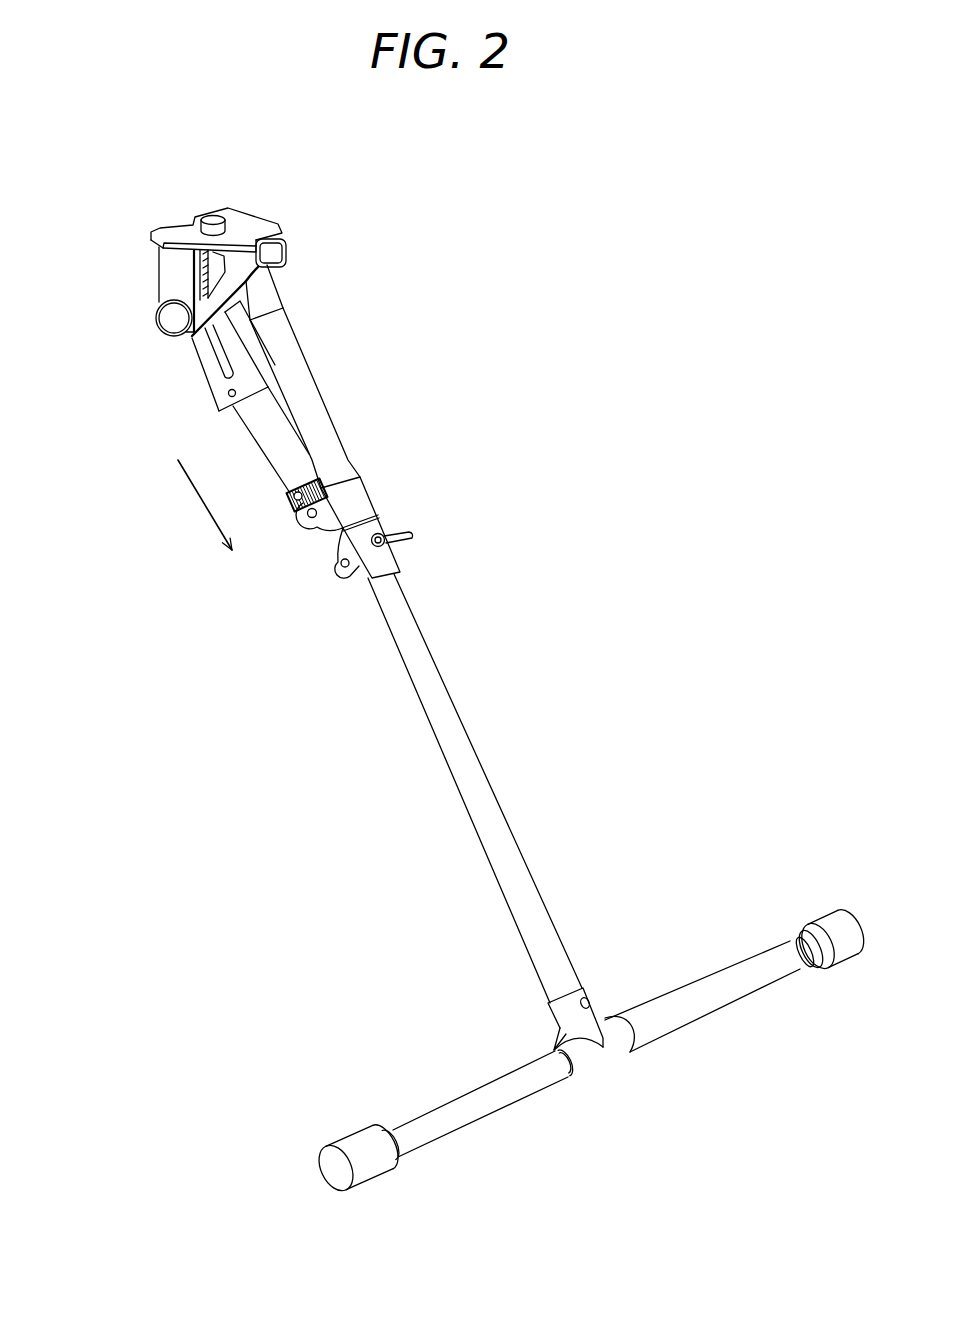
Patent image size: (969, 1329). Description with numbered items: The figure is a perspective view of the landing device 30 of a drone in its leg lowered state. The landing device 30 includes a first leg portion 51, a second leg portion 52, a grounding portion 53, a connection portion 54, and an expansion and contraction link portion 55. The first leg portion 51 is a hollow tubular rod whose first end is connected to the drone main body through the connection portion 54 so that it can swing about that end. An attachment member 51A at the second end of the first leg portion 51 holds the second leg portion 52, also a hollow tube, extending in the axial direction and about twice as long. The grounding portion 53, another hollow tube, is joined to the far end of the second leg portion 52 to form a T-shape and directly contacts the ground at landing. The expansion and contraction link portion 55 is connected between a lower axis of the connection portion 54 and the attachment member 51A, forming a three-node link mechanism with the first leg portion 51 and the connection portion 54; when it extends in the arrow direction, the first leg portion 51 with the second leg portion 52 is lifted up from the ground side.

The landing device 30 is at (682, 412).
The first leg portion 51 is at (307, 387).
The attachment member 51A is at (403, 500).
The second leg portion 52 is at (465, 742).
The grounding portion 53 is at (712, 985).
The connection portion 54 is at (128, 262).
The expansion and contraction link portion 55 is at (193, 403).